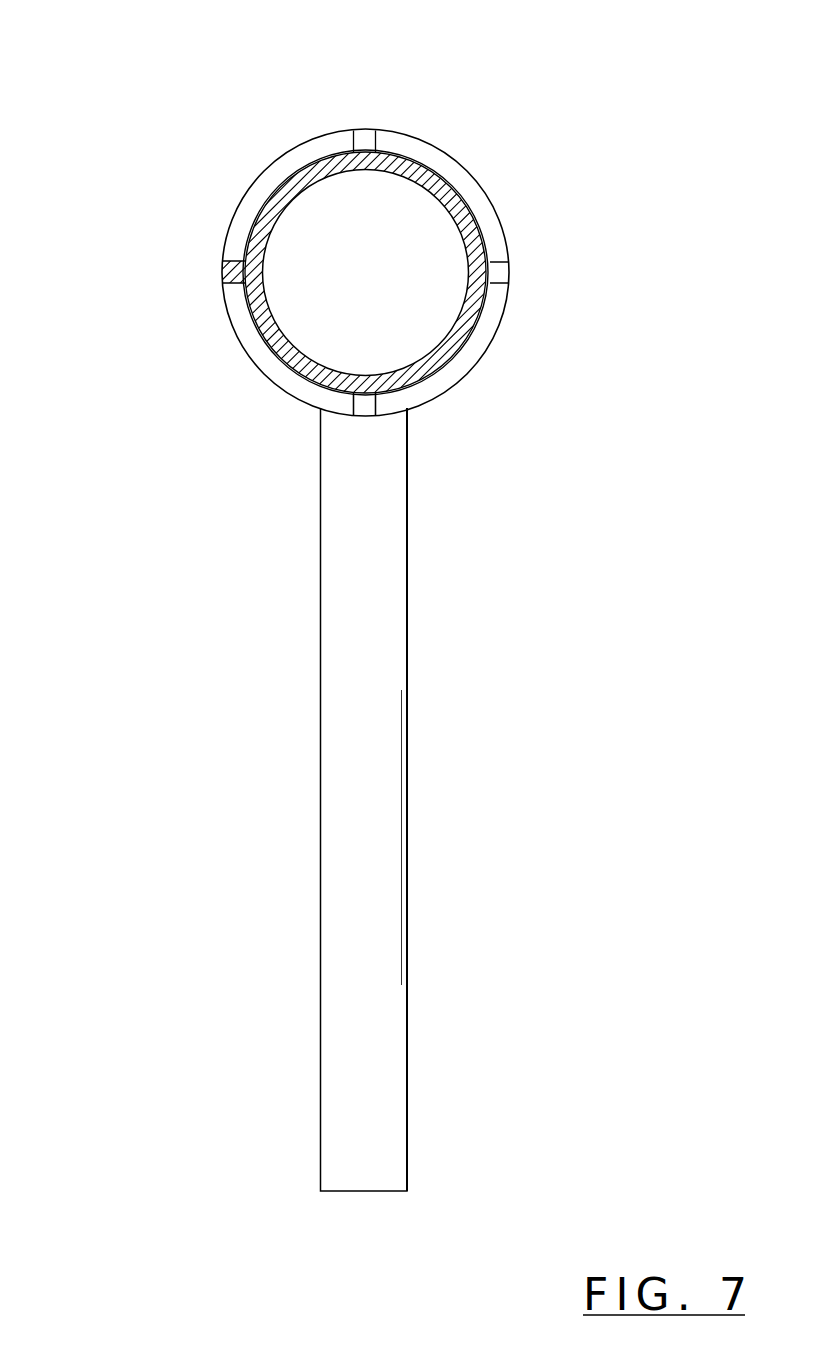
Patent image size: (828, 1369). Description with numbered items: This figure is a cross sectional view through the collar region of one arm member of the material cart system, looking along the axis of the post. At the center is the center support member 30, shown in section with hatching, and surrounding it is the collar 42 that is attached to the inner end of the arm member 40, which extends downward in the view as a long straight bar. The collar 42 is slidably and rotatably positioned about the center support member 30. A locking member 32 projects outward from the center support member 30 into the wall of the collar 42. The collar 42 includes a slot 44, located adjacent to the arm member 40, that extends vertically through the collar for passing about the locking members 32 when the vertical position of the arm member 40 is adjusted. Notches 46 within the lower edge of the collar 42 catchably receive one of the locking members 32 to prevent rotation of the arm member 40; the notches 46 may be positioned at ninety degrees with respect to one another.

The center support member 30 is at (290, 180).
The locking member 32 is at (222, 272).
The arm member 40 is at (347, 698).
The collar 42 is at (485, 207).
The slot 44 is at (363, 408).
The notch 46 is at (365, 140).